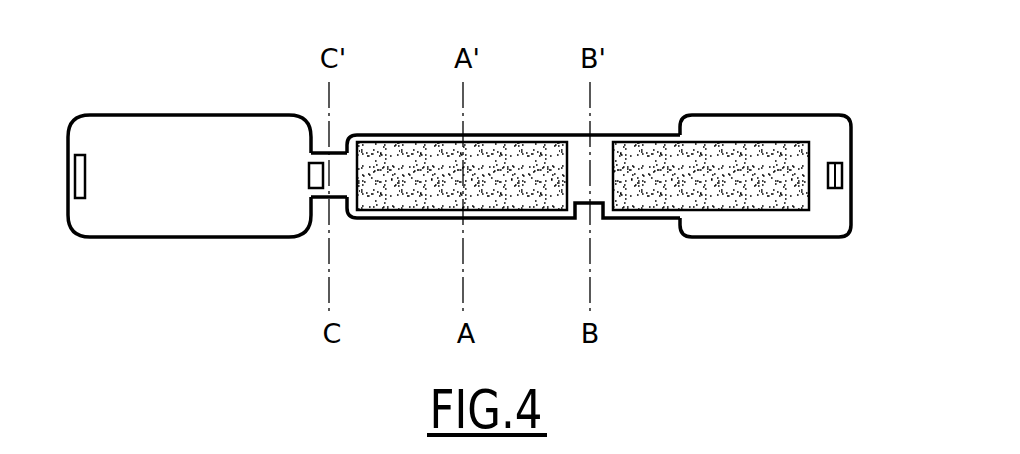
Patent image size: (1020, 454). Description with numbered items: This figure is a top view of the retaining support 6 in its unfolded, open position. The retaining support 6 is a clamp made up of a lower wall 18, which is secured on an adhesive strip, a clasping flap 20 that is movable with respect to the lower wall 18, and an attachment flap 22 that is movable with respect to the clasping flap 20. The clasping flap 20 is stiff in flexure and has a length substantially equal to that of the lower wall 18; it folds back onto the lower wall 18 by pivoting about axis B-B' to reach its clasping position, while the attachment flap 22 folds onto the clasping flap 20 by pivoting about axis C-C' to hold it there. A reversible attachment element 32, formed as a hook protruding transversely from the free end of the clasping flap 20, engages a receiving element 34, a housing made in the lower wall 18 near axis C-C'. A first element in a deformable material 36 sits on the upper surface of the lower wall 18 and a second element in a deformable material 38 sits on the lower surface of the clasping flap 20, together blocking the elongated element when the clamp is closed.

The retaining support 6 is at (815, 94).
The lower wall 18 is at (520, 220).
The clasping flap 20 is at (738, 222).
The attachment flap 22 is at (182, 200).
The reversible attachment element 32 is at (846, 173).
The receiving element 34 is at (307, 181).
The first element in a deformable material 36 is at (660, 174).
The second element in a deformable material 38 is at (417, 182).